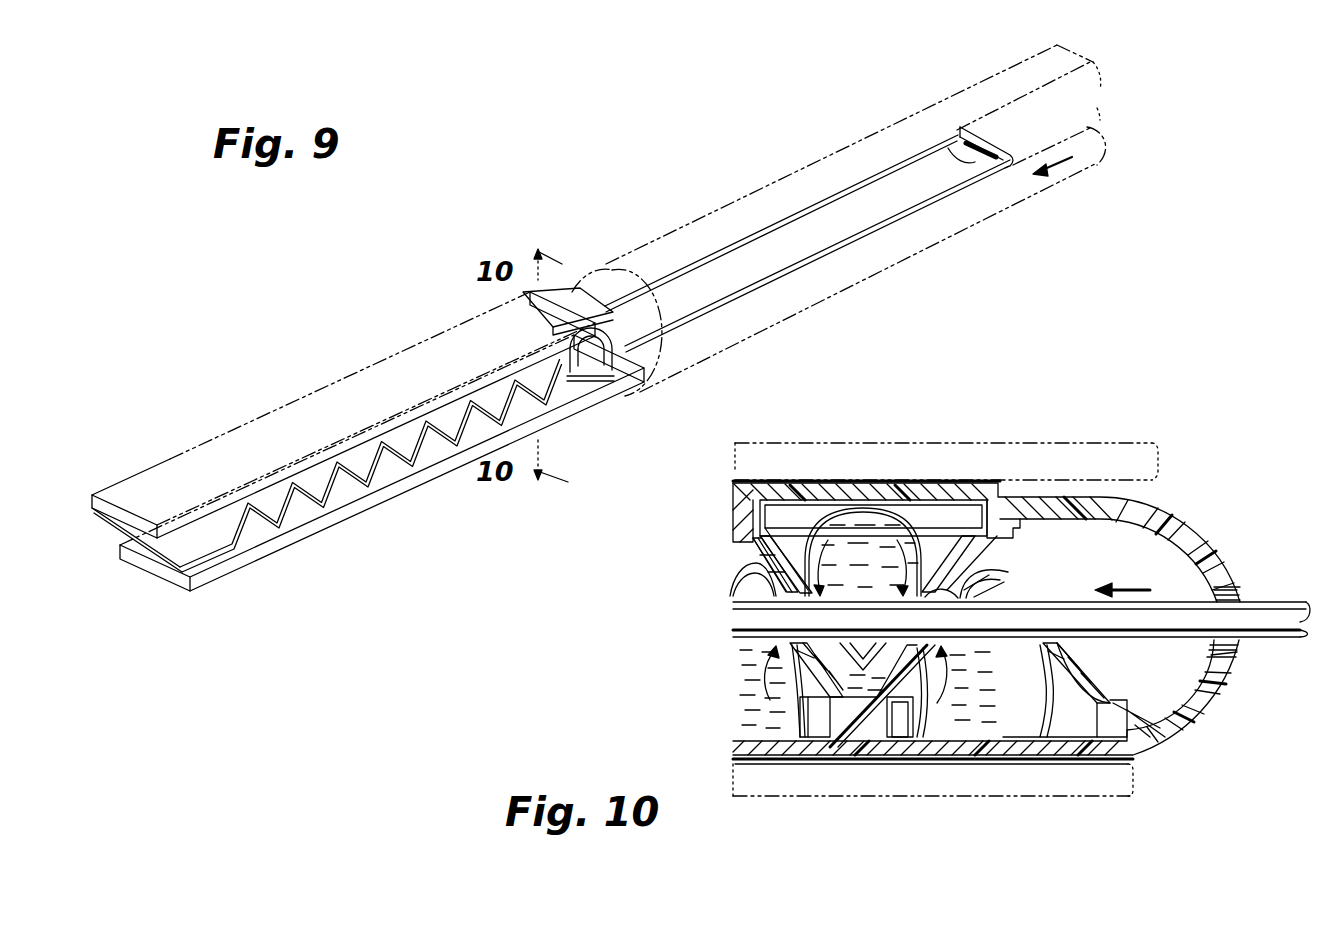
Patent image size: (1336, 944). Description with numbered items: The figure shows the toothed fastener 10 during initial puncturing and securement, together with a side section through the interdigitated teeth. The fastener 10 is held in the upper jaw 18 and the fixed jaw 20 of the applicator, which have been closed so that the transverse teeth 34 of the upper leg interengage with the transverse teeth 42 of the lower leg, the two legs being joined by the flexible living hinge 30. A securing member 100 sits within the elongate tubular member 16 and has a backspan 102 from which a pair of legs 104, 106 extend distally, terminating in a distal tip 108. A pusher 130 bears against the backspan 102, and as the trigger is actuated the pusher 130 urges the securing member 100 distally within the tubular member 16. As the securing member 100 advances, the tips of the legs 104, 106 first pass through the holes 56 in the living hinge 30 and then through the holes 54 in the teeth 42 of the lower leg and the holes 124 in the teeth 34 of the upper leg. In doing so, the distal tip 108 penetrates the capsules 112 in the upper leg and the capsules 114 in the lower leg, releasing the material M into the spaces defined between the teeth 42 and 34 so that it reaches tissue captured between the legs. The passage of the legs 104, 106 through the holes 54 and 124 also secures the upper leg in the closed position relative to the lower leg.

In FIG. 9, the toothed fastener 10 is at (120, 590).
In FIG. 9, the elongate tubular member 16 is at (1002, 68).
In FIG. 10, the elongate tubular member 16 is at (945, 619).
In FIG. 9, the upper jaw 18 is at (180, 457).
In FIG. 9, the fixed jaw 20 is at (283, 548).
In FIG. 9, the living hinge 30 is at (618, 373).
In FIG. 10, the living hinge 30 is at (1218, 540).
In FIG. 10, the transverse teeth 34 is at (757, 555).
In FIG. 10, the transverse teeth 42 is at (985, 572).
In FIG. 10, the holes 54 is at (1070, 650).
In FIG. 9, the holes 56 is at (590, 378).
In FIG. 10, the holes 56 is at (1242, 597).
In FIG. 9, the securing member 100 is at (810, 200).
In FIG. 9, the backspan 102 is at (927, 160).
In FIG. 10, the leg 104 is at (1295, 636).
In FIG. 9, the leg 106 is at (668, 280).
In FIG. 9, the distal tip 108 is at (732, 280).
In FIG. 10, the capsules 112 is at (800, 590).
In FIG. 10, the capsules 114 is at (907, 720).
In FIG. 10, the holes 124 is at (843, 592).
In FIG. 9, the pusher 130 is at (1088, 98).
In FIG. 10, the material M is at (1045, 586).